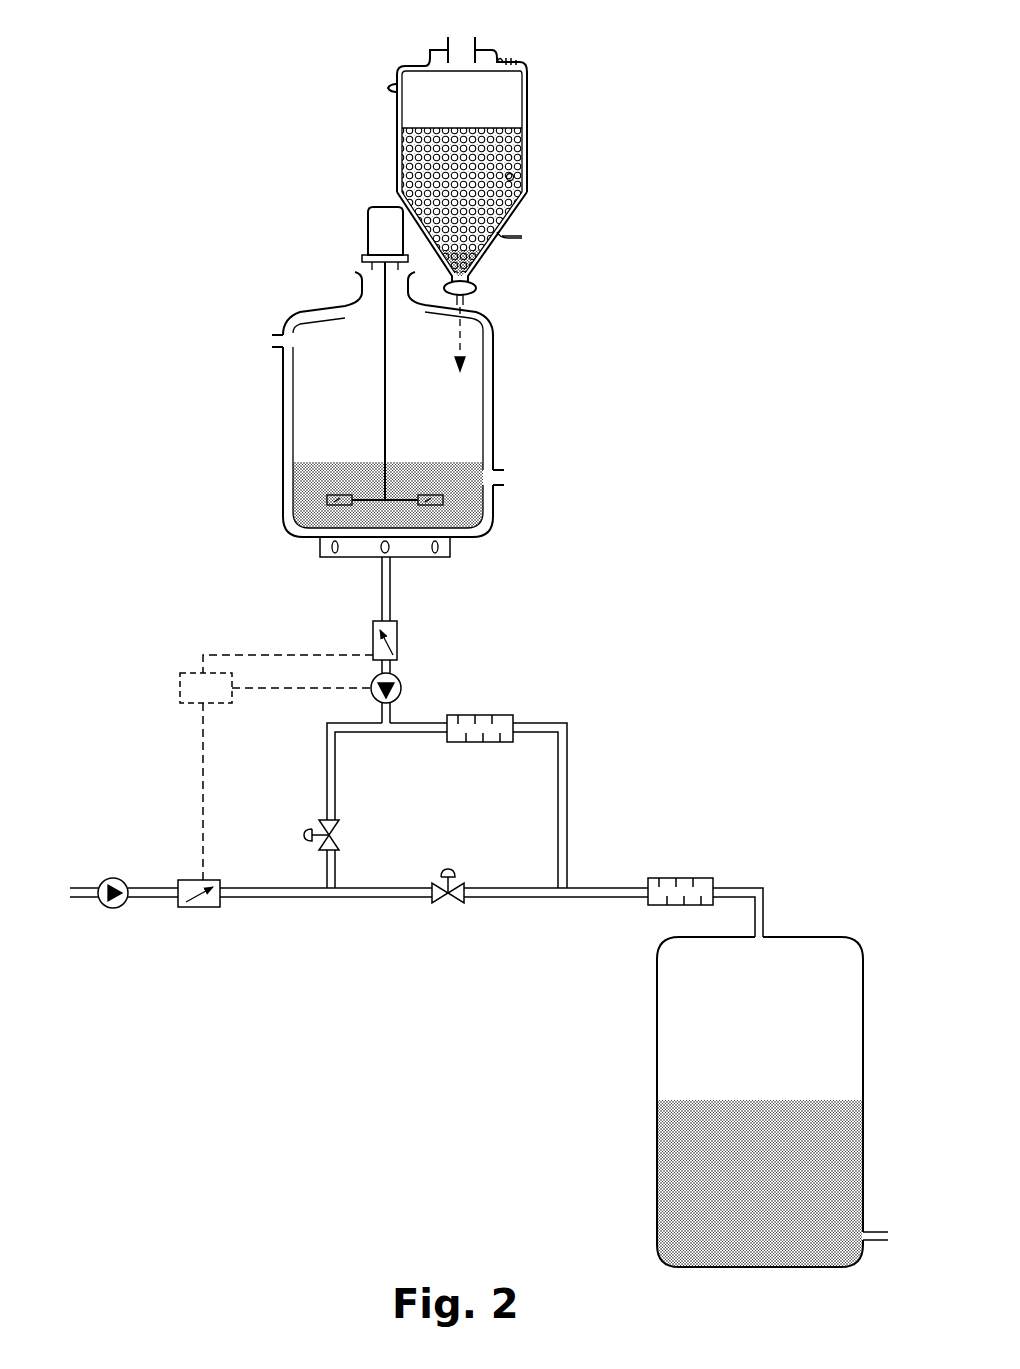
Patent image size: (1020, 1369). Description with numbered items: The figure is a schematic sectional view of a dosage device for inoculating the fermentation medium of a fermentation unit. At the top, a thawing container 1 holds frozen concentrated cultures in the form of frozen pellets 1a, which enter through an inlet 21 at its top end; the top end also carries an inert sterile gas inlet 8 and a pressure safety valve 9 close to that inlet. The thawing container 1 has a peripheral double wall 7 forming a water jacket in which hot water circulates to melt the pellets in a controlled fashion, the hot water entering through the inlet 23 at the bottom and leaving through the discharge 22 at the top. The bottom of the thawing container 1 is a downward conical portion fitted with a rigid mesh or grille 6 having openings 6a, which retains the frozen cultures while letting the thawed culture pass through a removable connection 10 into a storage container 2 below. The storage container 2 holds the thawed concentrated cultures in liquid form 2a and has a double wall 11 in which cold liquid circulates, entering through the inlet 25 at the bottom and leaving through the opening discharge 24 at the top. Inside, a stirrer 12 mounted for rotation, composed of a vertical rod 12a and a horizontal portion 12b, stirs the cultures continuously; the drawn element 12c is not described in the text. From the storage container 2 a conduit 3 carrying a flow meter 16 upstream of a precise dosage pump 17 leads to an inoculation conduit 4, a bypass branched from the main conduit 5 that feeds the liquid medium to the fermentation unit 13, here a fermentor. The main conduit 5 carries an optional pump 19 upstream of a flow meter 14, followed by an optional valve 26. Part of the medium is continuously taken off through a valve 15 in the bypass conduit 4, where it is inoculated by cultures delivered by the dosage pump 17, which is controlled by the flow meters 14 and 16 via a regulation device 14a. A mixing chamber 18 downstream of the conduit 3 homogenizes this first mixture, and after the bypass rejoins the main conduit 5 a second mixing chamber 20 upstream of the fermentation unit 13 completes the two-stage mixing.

The thawing container 1 is at (520, 150).
The frozen pellets 1a is at (500, 177).
The storage container 2 is at (460, 395).
The thawed concentrated cultures in liquid form 2a is at (455, 503).
The conduit 3 is at (392, 590).
The inoculation conduit 4 is at (421, 733).
The main conduit 5 is at (285, 898).
The mesh or grille 6 is at (484, 241).
The openings 6a is at (497, 265).
The peripheral double wall 7 is at (528, 101).
The inert sterile gas inlet 8 is at (503, 58).
The pressure safety valve 9 is at (520, 61).
The removable connection 10 is at (478, 289).
The double wall 11 is at (490, 367).
The stirrer 12 is at (390, 425).
The vertical rod 12a is at (380, 393).
The horizontal portion 12b is at (355, 497).
The stirrer thermocouple 12c is at (425, 500).
The fermentation unit 13 is at (657, 1030).
The flow meter 14 is at (198, 907).
The regulation device 14a is at (180, 688).
The valve 15 is at (340, 840).
The flow meter 16 is at (373, 645).
The pump 17 is at (402, 688).
The mixing chamber 18 is at (479, 715).
The pump 19 is at (113, 878).
The mixing chamber 20 is at (680, 878).
The inlet 21 is at (460, 50).
The discharge 22 is at (388, 88).
The inlet 23 is at (526, 238).
The opening discharge 24 is at (282, 341).
The inlet 25 is at (500, 479).
The valve 26 is at (447, 905).